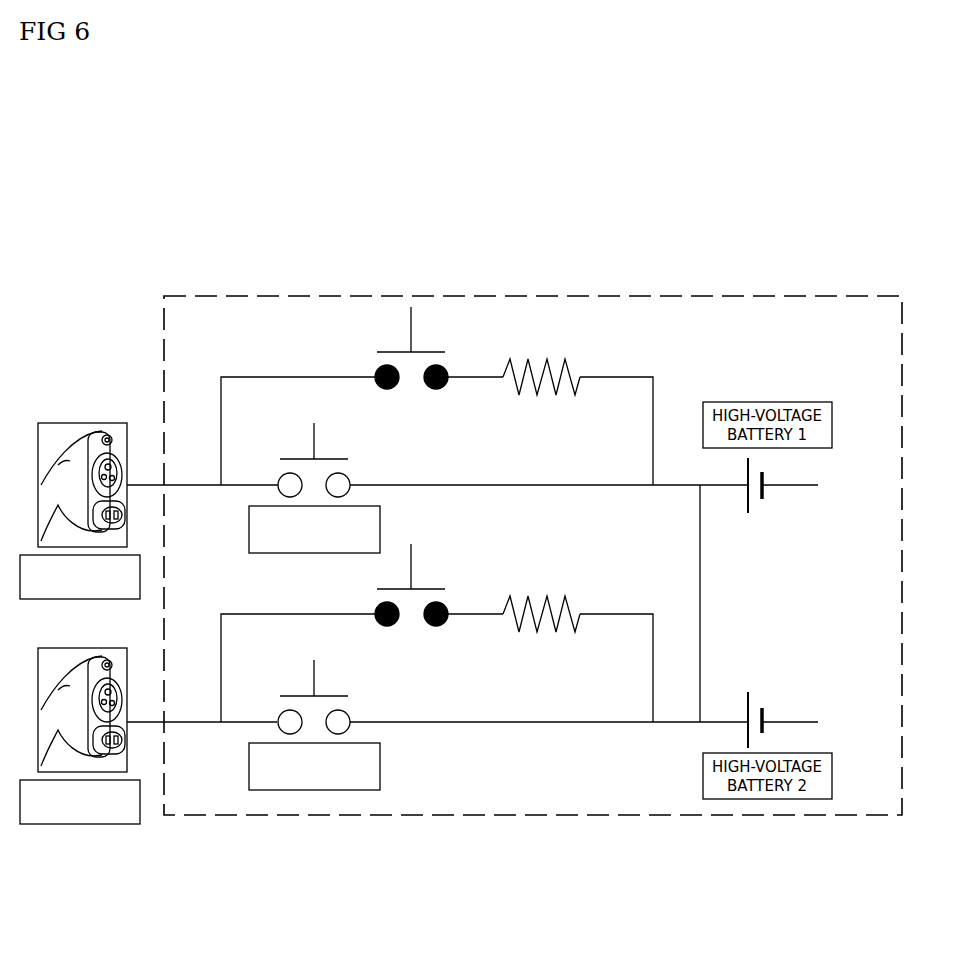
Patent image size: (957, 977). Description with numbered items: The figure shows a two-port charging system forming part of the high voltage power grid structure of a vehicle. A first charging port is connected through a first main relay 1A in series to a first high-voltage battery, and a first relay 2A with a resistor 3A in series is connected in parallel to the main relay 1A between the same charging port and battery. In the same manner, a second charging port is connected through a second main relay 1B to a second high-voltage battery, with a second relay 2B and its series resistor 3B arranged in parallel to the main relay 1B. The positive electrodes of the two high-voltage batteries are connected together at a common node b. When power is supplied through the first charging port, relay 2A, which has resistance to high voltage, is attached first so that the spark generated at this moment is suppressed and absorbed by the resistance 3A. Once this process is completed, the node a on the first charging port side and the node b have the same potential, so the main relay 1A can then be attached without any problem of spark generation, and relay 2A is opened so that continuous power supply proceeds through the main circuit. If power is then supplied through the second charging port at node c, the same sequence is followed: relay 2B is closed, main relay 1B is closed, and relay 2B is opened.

The first charging port side node a is at (149, 511).
The battery side node b is at (721, 603).
The second charging port side node c is at (148, 736).
The first main relay 1A is at (309, 488).
The second main relay 1B is at (309, 725).
The first relay 2A is at (411, 369).
The second relay 2B is at (411, 606).
The first resistor 3A is at (541, 395).
The second resistor 3B is at (541, 632).